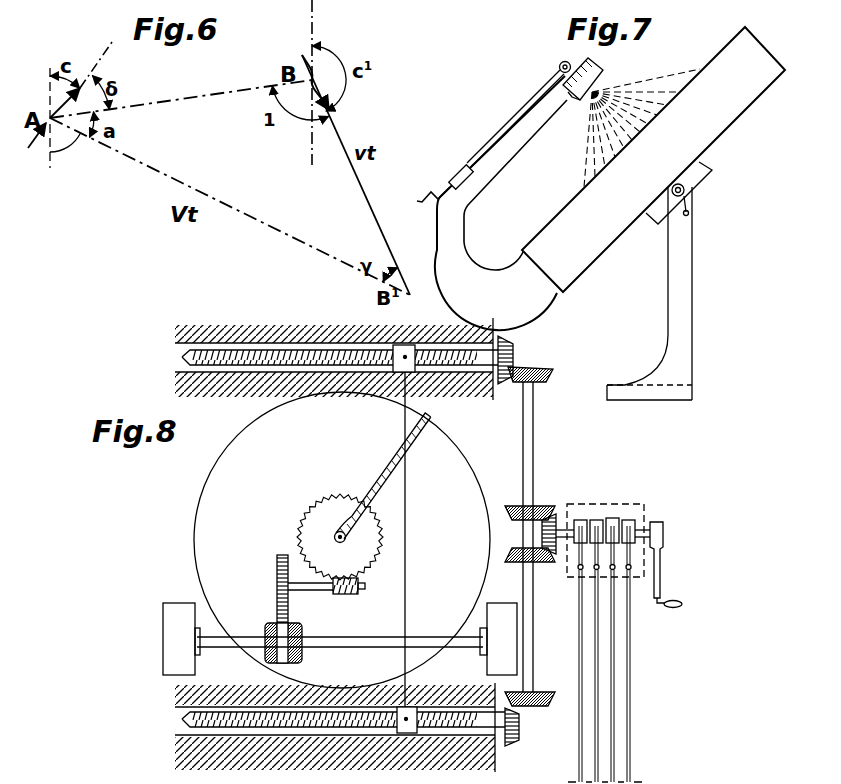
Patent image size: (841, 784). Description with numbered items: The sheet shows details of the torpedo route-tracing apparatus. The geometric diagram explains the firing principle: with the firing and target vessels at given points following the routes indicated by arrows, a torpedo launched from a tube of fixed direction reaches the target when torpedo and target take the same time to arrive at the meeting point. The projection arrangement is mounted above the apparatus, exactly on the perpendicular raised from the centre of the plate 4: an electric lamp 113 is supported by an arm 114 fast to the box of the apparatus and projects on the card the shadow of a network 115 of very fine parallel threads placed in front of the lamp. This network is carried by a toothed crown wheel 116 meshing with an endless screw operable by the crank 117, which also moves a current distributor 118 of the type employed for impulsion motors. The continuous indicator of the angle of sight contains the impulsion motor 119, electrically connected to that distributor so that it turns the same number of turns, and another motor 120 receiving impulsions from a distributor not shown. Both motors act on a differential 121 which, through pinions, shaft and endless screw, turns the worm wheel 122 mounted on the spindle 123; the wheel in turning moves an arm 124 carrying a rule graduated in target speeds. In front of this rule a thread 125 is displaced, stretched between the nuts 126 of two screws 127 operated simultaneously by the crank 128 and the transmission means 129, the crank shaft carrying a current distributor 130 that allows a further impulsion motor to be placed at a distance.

In FIG. 7, the plate 4 is at (712, 112).
In FIG. 7, the electric lamp 113 is at (560, 70).
In FIG. 7, the arm 114 is at (448, 250).
In FIG. 7, the network of fine parallel threads 115 is at (642, 121).
In FIG. 7, the toothed crown wheel 116 is at (590, 58).
In FIG. 7, the crank 117 is at (425, 196).
In FIG. 7, the current distributor 118 is at (461, 169).
In FIG. 8, the impulsion motor 119 is at (162, 656).
In FIG. 8, the motor 120 is at (500, 646).
In FIG. 8, the differential 121 is at (268, 627).
In FIG. 8, the worm wheel 122 is at (310, 525).
In FIG. 8, the spindle 123 is at (337, 531).
In FIG. 8, the arm 124 is at (413, 454).
In FIG. 8, the thread 125 is at (407, 556).
In FIG. 8, the nuts 126 is at (392, 346).
In FIG. 8, the screws 127 is at (219, 356).
In FIG. 8, the crank 128 is at (666, 548).
In FIG. 8, the transmission means 129 is at (552, 456).
In FIG. 8, the current distributor 130 is at (613, 526).